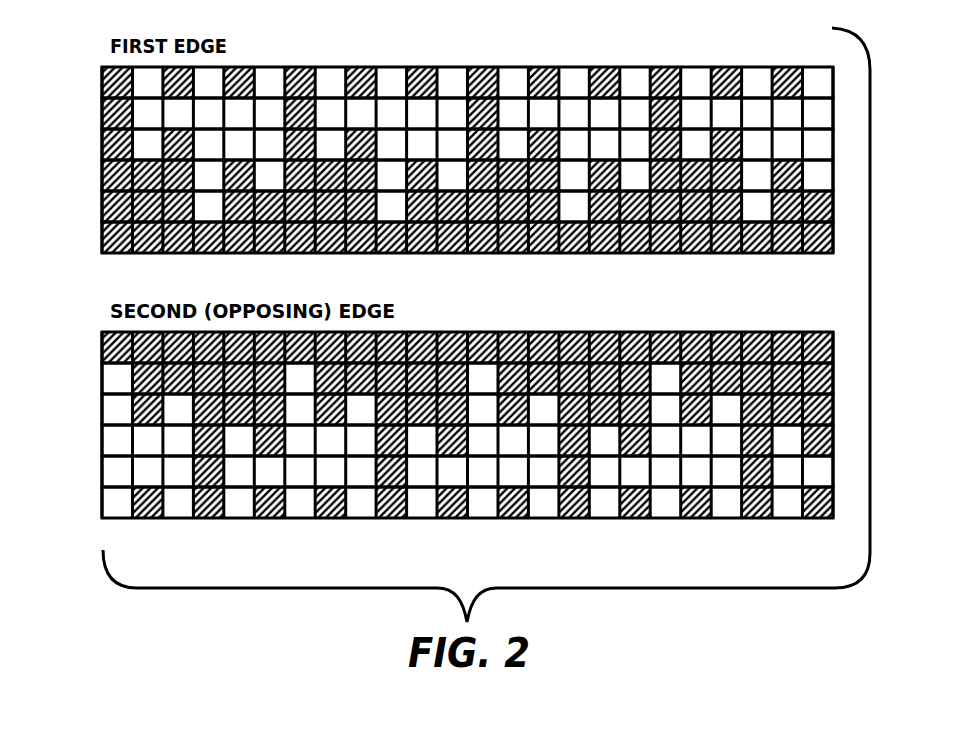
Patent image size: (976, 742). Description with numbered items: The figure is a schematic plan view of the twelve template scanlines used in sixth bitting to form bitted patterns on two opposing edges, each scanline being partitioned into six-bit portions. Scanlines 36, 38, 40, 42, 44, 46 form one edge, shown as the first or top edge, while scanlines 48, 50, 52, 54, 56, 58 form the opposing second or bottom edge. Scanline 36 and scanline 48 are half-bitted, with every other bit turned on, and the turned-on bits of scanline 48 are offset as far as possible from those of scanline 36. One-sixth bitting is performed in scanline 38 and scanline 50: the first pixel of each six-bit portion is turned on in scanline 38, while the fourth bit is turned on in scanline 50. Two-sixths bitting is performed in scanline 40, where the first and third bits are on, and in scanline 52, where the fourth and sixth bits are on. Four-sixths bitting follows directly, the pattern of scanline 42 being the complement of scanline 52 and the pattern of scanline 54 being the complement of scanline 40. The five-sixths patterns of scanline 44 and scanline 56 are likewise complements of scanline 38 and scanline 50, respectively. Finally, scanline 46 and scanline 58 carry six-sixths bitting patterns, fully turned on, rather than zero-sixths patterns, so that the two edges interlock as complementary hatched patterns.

The template scanline 36 is at (98, 82).
The template scanline 38 is at (98, 113).
The template scanline 40 is at (98, 143).
The template scanline 42 is at (98, 178).
The template scanline 44 is at (98, 212).
The template scanline 46 is at (98, 240).
The template scanline 48 is at (98, 503).
The template scanline 50 is at (98, 475).
The template scanline 52 is at (98, 443).
The template scanline 54 is at (98, 408).
The template scanline 56 is at (98, 374).
The template scanline 58 is at (98, 346).